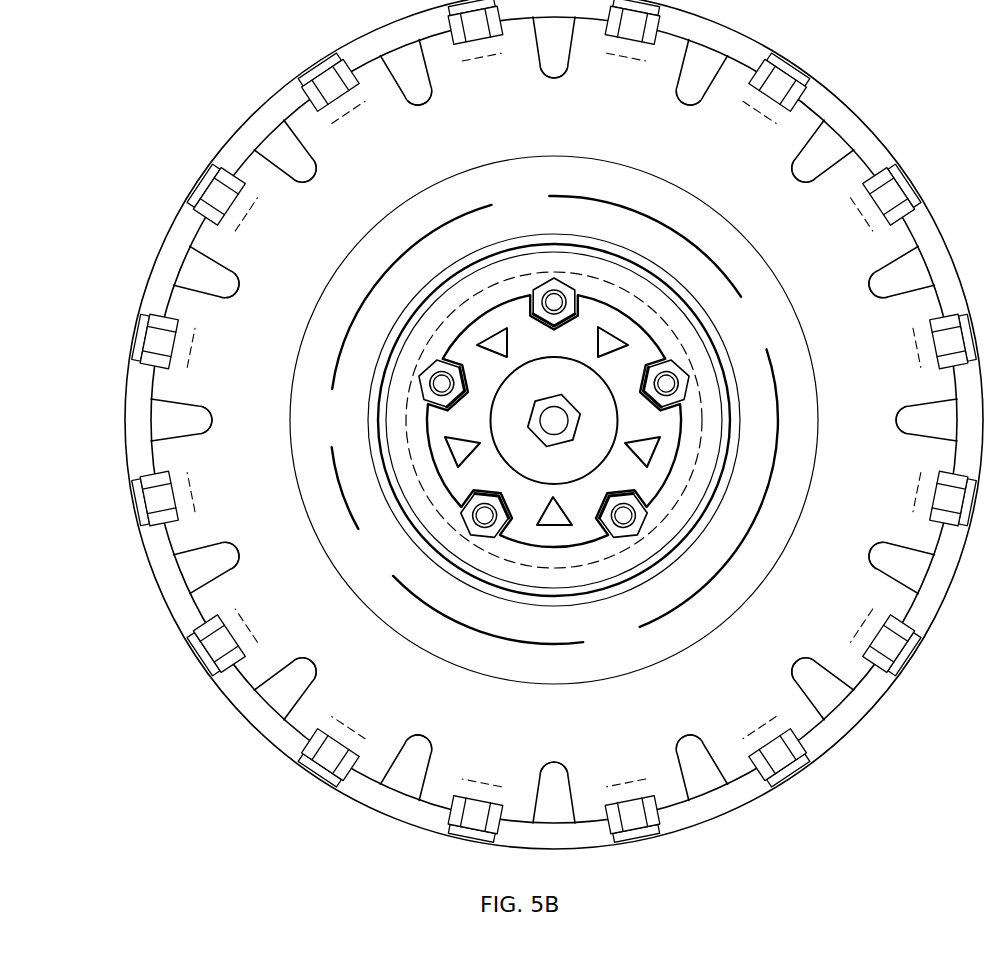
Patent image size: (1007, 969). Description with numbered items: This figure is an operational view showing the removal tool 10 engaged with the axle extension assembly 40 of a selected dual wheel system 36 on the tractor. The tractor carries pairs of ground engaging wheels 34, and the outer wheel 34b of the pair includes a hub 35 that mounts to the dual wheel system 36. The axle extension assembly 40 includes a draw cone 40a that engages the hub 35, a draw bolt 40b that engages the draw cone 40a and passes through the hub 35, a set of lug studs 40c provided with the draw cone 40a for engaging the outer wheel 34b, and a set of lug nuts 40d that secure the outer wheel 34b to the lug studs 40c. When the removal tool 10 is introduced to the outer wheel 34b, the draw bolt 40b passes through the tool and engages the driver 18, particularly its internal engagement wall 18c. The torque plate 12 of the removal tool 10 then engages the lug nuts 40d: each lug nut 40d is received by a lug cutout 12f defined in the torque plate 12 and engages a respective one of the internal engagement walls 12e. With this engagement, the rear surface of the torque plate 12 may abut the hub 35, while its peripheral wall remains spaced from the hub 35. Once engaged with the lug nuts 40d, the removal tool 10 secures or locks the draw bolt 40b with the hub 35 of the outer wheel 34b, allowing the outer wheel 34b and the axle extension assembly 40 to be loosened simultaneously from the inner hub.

The removal tool 10 is at (604, 283).
The torque plate 12 is at (539, 455).
The internal engagement walls 12e is at (470, 320).
The lug cutout 12f is at (499, 540).
The driver 18 is at (421, 328).
The internal engagement wall 18c is at (490, 410).
The ground engaging wheels 34 is at (554, 424).
The outer wheel 34b is at (278, 93).
The hub 35 is at (648, 275).
The dual wheel system 36 is at (574, 421).
The axle extension assembly 40 is at (574, 421).
The draw cone 40a is at (697, 463).
The draw bolt 40b is at (566, 450).
The lug studs 40c is at (554, 292).
The lug nuts 40d is at (572, 289).